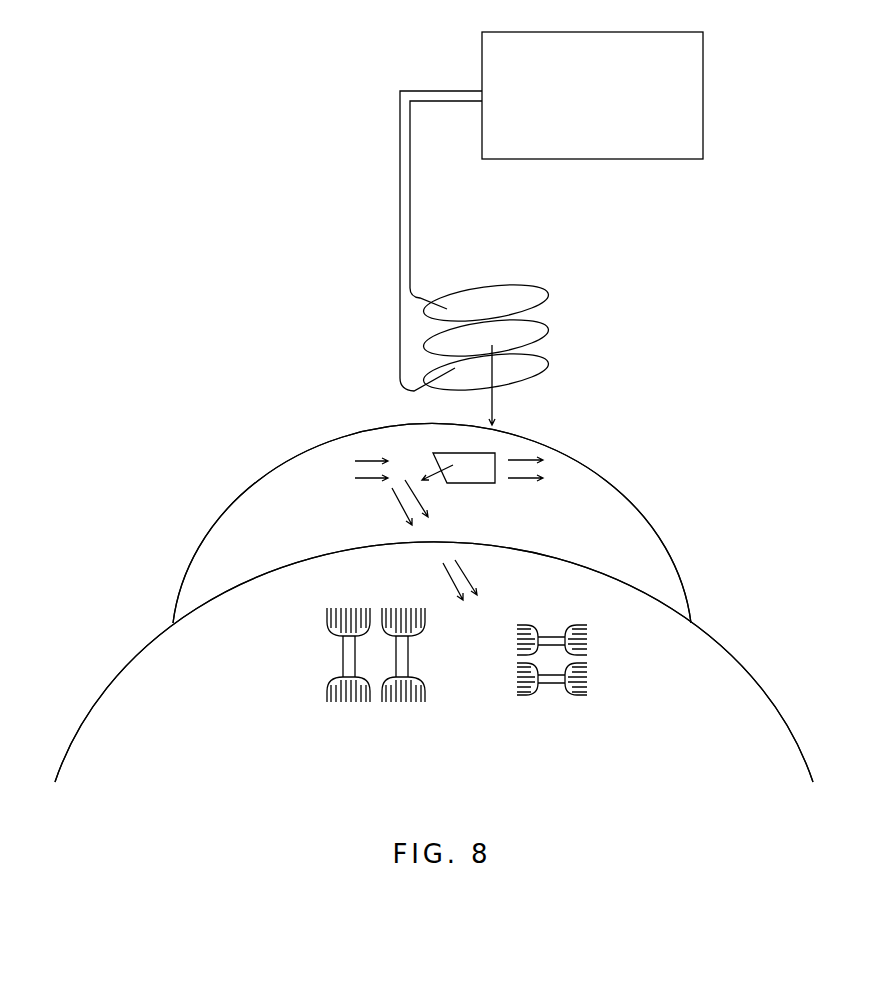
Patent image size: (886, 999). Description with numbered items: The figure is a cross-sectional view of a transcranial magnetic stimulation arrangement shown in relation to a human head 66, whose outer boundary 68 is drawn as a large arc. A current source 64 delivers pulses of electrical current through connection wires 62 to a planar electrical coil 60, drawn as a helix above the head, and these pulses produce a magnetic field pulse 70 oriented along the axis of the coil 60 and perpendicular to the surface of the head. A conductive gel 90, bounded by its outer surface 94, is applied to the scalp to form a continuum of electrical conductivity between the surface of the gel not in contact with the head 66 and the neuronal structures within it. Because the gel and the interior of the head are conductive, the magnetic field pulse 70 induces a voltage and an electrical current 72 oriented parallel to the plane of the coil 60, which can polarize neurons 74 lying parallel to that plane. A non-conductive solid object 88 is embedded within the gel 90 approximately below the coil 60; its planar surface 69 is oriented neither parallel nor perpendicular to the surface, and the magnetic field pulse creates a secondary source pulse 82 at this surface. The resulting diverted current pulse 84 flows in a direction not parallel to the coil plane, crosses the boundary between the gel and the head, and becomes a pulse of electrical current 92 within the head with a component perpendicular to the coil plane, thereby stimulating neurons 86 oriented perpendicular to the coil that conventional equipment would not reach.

The planar electrical coil 60 is at (548, 296).
The connection wires 62 is at (400, 172).
The current source 64 is at (703, 91).
The head 66 is at (742, 667).
The skin 68 is at (792, 765).
The planar surface 69 is at (428, 460).
The magnetic field pulse 70 is at (493, 400).
The electrical current 72 is at (356, 462).
The neurons 74 is at (576, 700).
The secondary source pulse 82 is at (433, 477).
The diverted current pulse 84 is at (402, 511).
The neurons 86 is at (343, 660).
The non-conductive solid object 88 is at (495, 483).
The conductive gel 90 is at (627, 534).
The pulse of electrical current 92 is at (443, 585).
The tissue boundary 94 is at (607, 483).